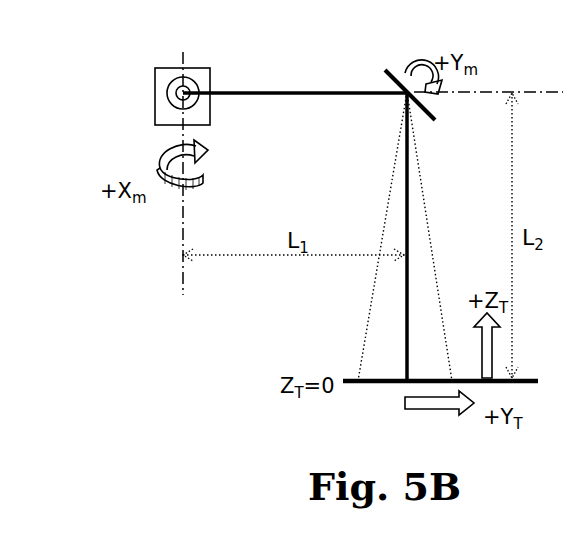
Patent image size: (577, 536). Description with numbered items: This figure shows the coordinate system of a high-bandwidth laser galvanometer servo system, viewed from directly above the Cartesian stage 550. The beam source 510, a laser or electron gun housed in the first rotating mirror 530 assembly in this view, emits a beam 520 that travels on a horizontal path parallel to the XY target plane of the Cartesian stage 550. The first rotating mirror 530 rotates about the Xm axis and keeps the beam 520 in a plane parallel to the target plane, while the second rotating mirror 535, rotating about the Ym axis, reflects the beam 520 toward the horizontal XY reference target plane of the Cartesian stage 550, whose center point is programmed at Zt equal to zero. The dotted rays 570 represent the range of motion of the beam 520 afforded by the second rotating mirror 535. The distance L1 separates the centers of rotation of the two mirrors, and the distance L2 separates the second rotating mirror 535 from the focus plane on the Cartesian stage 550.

The beam source 510 is at (112, 62).
The beam 520 is at (131, 58).
The first rotating mirror 530 is at (138, 91).
The second rotating mirror 535 is at (386, 74).
The Cartesian stage 550 is at (365, 414).
The rays 570 is at (445, 335).